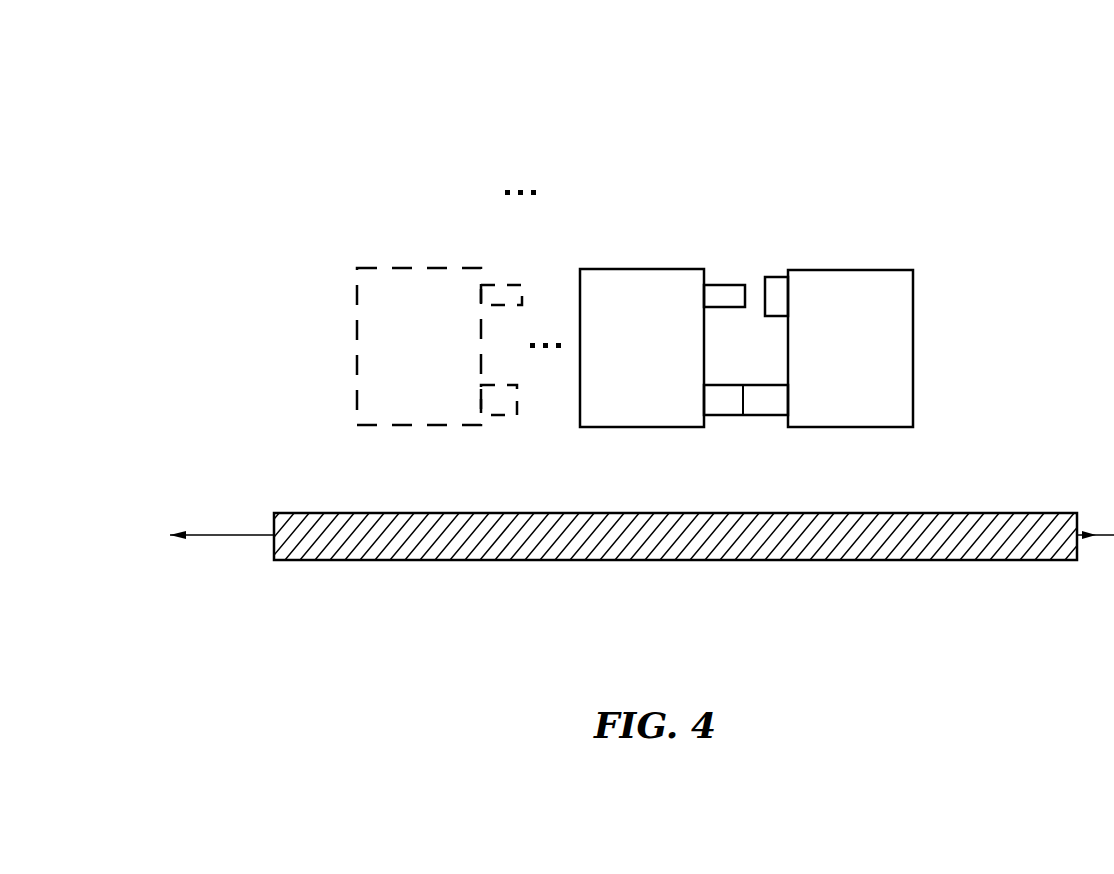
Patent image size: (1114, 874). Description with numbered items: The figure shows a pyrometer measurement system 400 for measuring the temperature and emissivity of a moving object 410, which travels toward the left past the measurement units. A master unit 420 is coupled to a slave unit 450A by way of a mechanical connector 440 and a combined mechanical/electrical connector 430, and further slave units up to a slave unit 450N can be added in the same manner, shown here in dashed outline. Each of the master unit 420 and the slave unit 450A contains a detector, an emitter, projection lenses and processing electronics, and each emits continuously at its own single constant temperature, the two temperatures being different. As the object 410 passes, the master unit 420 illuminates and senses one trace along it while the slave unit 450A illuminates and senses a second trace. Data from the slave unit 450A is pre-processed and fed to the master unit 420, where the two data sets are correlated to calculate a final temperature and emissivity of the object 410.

The system 400 is at (270, 42).
The moving object 410 is at (1010, 506).
The master unit 420 is at (852, 260).
The combined mechanical/electrical connector 430 is at (780, 260).
The mechanical connector 440 is at (757, 423).
The slave unit 450A is at (629, 256).
The slave unit 450N is at (427, 256).